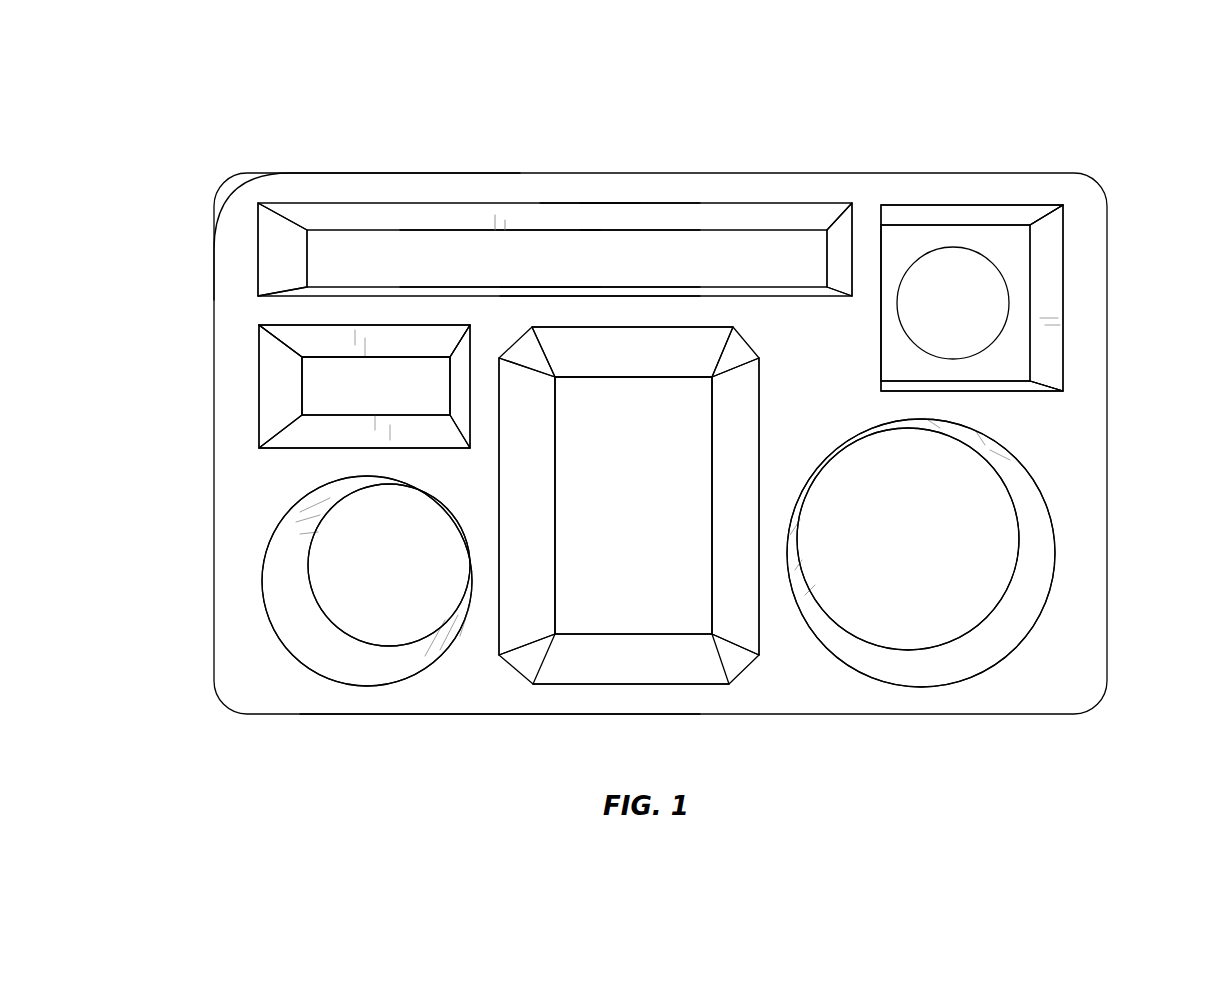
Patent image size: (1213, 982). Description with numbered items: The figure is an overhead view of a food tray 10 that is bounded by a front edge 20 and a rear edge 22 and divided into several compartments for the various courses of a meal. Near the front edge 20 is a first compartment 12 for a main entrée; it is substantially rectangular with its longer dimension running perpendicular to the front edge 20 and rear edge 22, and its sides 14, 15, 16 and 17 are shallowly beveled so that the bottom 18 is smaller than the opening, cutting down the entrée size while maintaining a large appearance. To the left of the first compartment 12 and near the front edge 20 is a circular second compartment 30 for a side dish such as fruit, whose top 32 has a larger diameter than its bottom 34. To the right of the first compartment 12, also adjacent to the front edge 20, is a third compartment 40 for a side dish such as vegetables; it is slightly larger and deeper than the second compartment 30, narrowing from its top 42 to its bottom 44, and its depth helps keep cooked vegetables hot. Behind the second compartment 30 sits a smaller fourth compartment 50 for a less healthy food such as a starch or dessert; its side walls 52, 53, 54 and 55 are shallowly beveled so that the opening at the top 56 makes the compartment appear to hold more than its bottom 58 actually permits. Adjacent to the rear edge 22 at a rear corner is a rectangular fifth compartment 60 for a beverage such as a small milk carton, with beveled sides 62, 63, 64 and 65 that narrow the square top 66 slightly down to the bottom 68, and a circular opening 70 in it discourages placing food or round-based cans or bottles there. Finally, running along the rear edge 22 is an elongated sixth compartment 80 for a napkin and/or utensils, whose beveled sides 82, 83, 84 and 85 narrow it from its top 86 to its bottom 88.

The tray 10 is at (262, 108).
The first compartment 12 is at (755, 676).
The side of the first compartment 14 is at (585, 684).
The side of the first compartment 15 is at (497, 512).
The side of the first compartment 16 is at (690, 327).
The side of the first compartment 17 is at (762, 455).
The bottom of the first compartment 18 is at (634, 684).
The front edge 20 is at (462, 740).
The rear edge 22 is at (389, 173).
The second compartment 30 is at (260, 616).
The top of the second compartment 32 is at (297, 658).
The bottom of the second compartment 34 is at (352, 645).
The third compartment 40 is at (1082, 616).
The top of the third compartment 42 is at (928, 686).
The bottom of the third compartment 44 is at (866, 642).
The fourth compartment 50 is at (245, 424).
The side wall of the fourth compartment 52 is at (259, 383).
The side wall of the fourth compartment 53 is at (292, 325).
The side wall of the fourth compartment 54 is at (472, 378).
The side wall of the fourth compartment 55 is at (308, 447).
The top of the fourth compartment 56 is at (259, 340).
The bottom of the fourth compartment 58 is at (302, 370).
The fifth compartment 60 is at (1080, 296).
The side of the fifth compartment 62 is at (1063, 362).
The side of the fifth compartment 63 is at (1005, 395).
The side of the fifth compartment 64 is at (881, 320).
The side of the fifth compartment 65 is at (1003, 225).
The top of the fifth compartment 66 is at (935, 205).
The bottom of the fifth compartment 68 is at (1020, 225).
The opening 70 is at (1000, 272).
The sixth compartment 80 is at (706, 196).
The beveled side of the sixth compartment 82 is at (590, 200).
The beveled side of the sixth compartment 83 is at (259, 245).
The beveled side of the sixth compartment 84 is at (598, 290).
The beveled side of the sixth compartment 85 is at (852, 230).
The top of the sixth compartment 86 is at (642, 203).
The bottom of the sixth compartment 88 is at (508, 215).